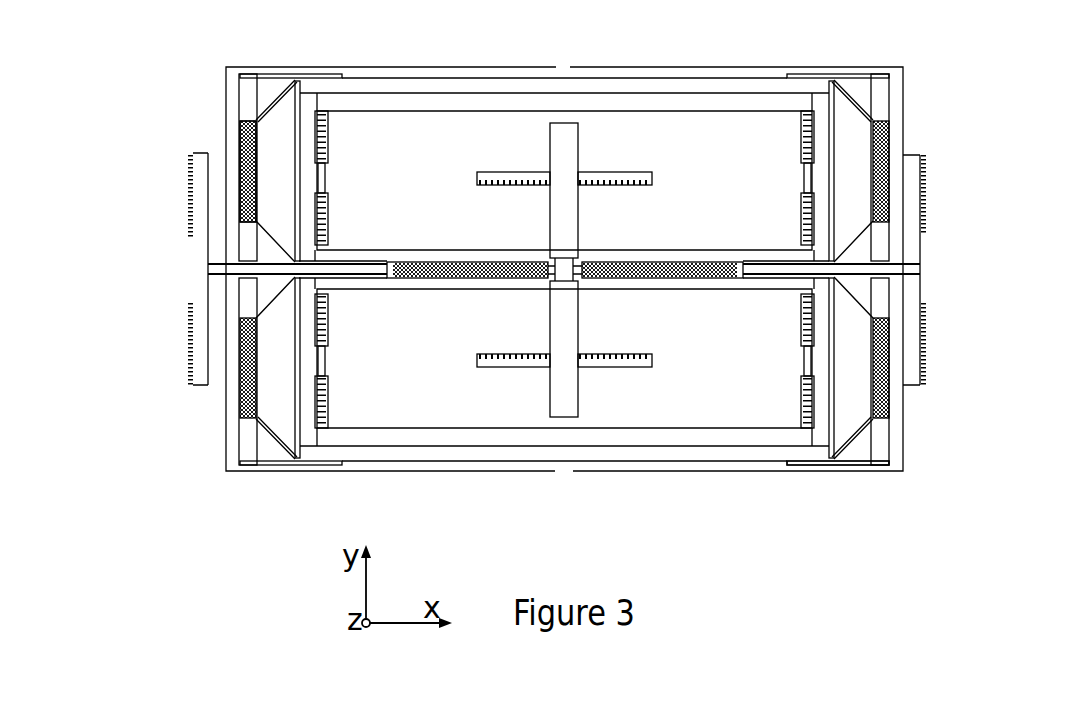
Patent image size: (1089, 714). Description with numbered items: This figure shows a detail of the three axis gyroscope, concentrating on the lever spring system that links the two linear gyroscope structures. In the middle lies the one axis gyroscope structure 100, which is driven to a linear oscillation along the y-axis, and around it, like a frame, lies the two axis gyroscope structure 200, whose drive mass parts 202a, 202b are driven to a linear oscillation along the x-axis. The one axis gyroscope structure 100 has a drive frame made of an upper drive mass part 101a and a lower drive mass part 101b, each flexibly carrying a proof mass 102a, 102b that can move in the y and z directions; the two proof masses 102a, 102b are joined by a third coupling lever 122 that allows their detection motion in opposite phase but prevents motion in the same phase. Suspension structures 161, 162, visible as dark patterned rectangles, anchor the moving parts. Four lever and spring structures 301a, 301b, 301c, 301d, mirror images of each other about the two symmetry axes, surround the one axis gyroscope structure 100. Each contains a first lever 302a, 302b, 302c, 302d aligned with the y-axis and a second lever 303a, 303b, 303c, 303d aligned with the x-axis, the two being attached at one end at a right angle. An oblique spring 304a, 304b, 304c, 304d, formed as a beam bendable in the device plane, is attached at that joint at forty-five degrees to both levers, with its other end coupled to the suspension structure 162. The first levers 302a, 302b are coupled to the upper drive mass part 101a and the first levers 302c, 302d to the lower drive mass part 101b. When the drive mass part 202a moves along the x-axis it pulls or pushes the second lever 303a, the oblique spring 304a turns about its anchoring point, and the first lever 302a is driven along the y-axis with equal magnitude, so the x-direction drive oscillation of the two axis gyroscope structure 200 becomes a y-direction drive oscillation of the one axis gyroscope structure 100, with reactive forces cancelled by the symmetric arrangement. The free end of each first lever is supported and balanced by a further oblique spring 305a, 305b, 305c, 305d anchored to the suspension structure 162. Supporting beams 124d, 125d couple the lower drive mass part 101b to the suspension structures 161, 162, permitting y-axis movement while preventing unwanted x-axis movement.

The one axis gyroscope structure 100 is at (445, 156).
The two axis gyroscope structure 200 is at (965, 103).
The drive mass part 101a is at (410, 88).
The drive mass part 101b is at (400, 448).
The proof mass 102a is at (530, 135).
The proof mass 102b is at (448, 393).
The third coupling lever 122 is at (560, 220).
The suspension structure 161 is at (647, 262).
The suspension structure 162 is at (240, 121).
The supporting beam 124d is at (775, 275).
The supporting beam 125d is at (798, 466).
The drive mass part 202a is at (208, 452).
The drive mass part 202b is at (908, 460).
The lever and spring structure 301a is at (270, 140).
The lever and spring structure 301b is at (847, 150).
The lever and spring structure 301c is at (270, 377).
The lever and spring structure 301d is at (847, 375).
The first lever 302a is at (292, 190).
The first lever 302b is at (835, 190).
The first lever 302c is at (294, 332).
The first lever 302d is at (835, 337).
The second lever 303a is at (226, 263).
The second lever 303b is at (870, 264).
The second lever 303c is at (226, 275).
The second lever 303d is at (873, 275).
The oblique spring 304a is at (273, 243).
The oblique spring 304b is at (852, 243).
The oblique spring 304c is at (273, 297).
The oblique spring 304d is at (855, 295).
The further oblique spring 305a is at (268, 110).
The further oblique spring 305b is at (853, 100).
The further oblique spring 305c is at (268, 440).
The further oblique spring 305d is at (857, 437).